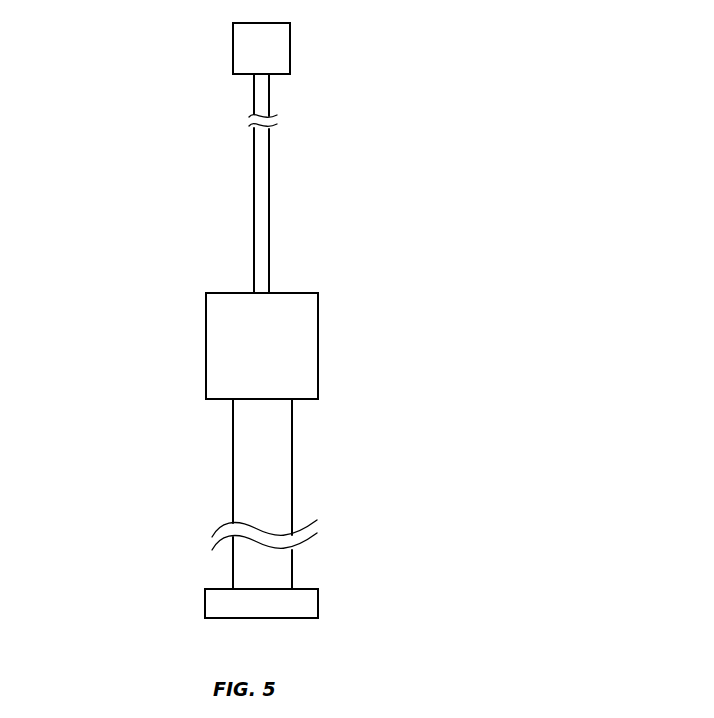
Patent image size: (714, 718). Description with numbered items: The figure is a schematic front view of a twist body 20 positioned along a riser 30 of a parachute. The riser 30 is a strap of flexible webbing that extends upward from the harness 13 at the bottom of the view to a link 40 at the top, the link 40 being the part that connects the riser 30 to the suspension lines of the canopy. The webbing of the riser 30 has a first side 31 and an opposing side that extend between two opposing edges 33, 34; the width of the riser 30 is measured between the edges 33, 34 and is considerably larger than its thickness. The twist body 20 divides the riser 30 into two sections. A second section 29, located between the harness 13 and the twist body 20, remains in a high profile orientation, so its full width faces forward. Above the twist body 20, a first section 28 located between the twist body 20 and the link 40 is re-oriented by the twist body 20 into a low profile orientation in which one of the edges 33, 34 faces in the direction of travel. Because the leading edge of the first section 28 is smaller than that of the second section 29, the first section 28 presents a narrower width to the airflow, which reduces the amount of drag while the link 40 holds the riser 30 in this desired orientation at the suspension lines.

The link 40 is at (277, 48).
The twist body 20 is at (295, 339).
The harness 13 is at (302, 604).
The first side 31 is at (254, 198).
The edge 33 is at (269, 223).
The riser 30 is at (263, 243).
The edge 34 is at (233, 484).
The first section 28 is at (153, 150).
The second section 29 is at (127, 554).